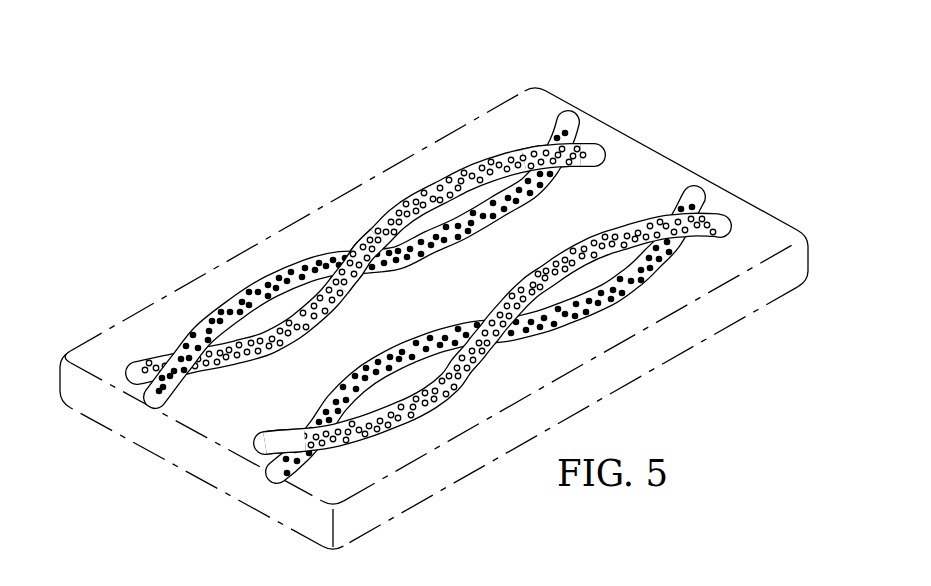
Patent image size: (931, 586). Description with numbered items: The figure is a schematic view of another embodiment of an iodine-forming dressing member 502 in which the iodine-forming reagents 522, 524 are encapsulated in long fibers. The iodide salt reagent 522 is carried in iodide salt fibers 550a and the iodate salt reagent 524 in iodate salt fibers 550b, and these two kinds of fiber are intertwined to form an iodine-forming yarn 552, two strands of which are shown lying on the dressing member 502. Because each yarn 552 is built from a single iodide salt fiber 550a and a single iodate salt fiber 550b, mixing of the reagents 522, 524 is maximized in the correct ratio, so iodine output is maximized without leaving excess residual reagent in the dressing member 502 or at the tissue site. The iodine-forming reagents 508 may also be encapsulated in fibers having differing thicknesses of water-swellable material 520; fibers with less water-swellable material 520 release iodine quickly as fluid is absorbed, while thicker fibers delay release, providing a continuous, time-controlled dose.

The iodine-forming dressing member 502 is at (375, 85).
The iodine-forming yarn 552 is at (379, 235).
The iodine-forming reagents 508 is at (462, 337).
The iodide salt fibers 550a is at (333, 259).
The iodate salt fibers 550b is at (302, 258).
The water-swellable material 520 is at (267, 446).
The iodide salt reagent 522 is at (416, 383).
The iodate salt reagent 524 is at (672, 259).